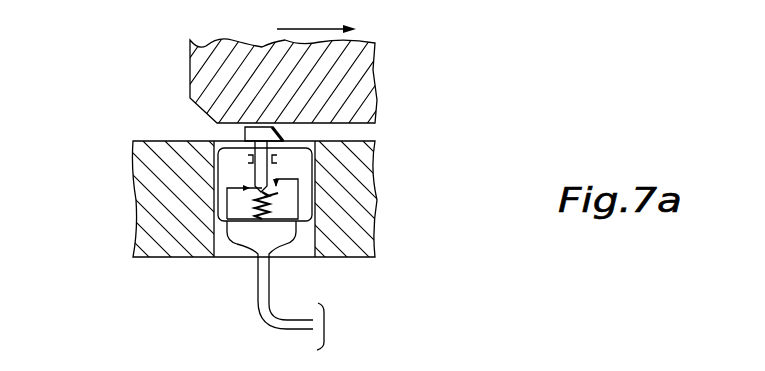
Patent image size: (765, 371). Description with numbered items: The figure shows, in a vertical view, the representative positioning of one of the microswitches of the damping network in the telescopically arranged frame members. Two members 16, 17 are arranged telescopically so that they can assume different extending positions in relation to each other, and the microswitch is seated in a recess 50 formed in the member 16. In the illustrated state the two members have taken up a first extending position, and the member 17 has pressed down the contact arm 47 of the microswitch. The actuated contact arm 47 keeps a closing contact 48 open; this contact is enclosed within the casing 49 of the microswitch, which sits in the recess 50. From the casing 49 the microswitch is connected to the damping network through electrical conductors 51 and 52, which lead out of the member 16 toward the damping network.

The member 16 is at (148, 215).
The member 17 is at (367, 94).
The contact arm 47 is at (245, 137).
The closing contact 48 is at (280, 188).
The casing 49 is at (293, 197).
The recess 50 is at (237, 251).
The electrical conductor 51 is at (270, 287).
The electrical conductor 52 is at (258, 303).